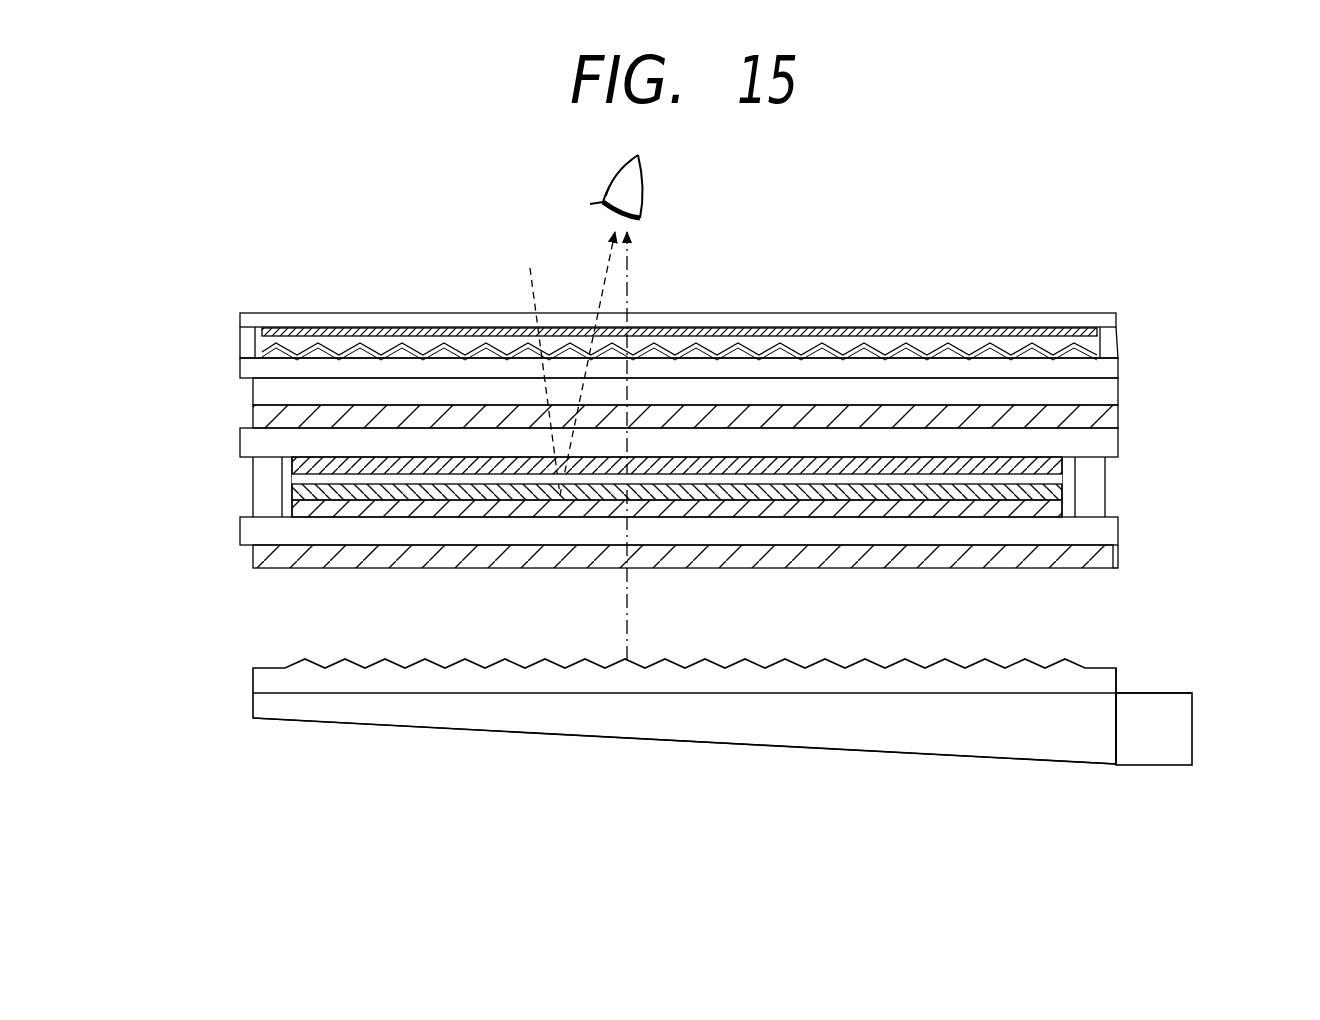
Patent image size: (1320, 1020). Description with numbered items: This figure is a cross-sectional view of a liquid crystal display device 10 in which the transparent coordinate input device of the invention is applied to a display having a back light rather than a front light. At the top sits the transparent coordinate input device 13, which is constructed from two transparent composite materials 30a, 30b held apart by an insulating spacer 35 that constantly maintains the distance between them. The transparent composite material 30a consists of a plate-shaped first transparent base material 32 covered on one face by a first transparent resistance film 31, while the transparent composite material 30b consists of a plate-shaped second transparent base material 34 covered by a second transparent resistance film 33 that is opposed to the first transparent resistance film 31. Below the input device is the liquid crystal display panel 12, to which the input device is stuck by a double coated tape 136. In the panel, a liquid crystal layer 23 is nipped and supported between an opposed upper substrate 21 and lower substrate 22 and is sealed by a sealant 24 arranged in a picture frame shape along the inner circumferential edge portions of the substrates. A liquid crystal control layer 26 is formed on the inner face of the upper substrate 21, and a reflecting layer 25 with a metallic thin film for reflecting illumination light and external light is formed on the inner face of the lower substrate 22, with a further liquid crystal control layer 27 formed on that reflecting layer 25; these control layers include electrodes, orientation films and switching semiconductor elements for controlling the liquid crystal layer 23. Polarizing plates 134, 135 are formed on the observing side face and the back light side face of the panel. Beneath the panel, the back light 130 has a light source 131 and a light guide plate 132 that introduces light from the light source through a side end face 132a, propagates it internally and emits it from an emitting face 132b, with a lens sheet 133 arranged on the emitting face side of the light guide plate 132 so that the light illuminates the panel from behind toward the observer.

The liquid crystal display device 10 is at (1026, 266).
The liquid crystal display panel 12 is at (704, 524).
The transparent coordinate input device 13 is at (679, 330).
The upper substrate 21 is at (1103, 443).
The lower substrate 22 is at (1065, 530).
The liquid crystal layer 23 is at (278, 485).
The sealant 24 is at (267, 505).
The reflecting layer 25 is at (683, 505).
The liquid crystal control layer 26 is at (945, 470).
The liquid crystal control layer 27 is at (832, 492).
The transparent composite material 30a is at (495, 330).
The transparent composite material 30b is at (733, 310).
The first transparent resistance film 31 is at (424, 347).
The first transparent base material 32 is at (1107, 370).
The second transparent resistance film 33 is at (352, 330).
The second transparent base material 34 is at (284, 318).
The insulating spacer 35 is at (247, 338).
The back light 130 is at (777, 737).
The light source 131 is at (1175, 748).
The light guide plate 132 is at (982, 727).
The side end face 132a is at (1117, 722).
The emitting face 132b is at (588, 698).
The lens sheet 133 is at (782, 683).
The polarizing plate 134 is at (260, 415).
The polarizing plate 135 is at (267, 552).
The double coated tape 136 is at (267, 393).